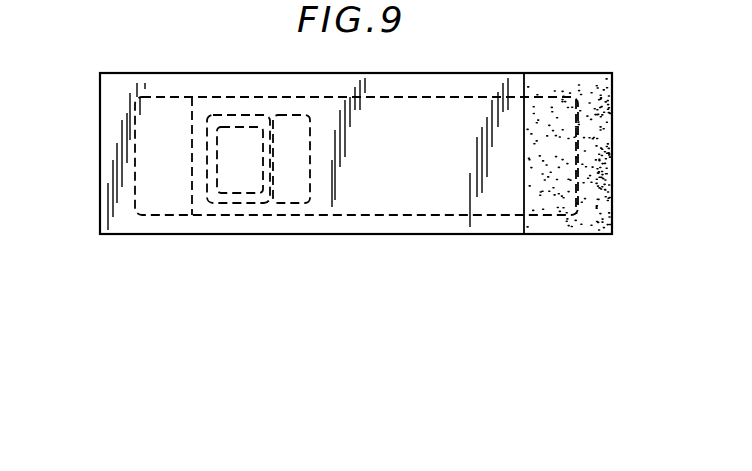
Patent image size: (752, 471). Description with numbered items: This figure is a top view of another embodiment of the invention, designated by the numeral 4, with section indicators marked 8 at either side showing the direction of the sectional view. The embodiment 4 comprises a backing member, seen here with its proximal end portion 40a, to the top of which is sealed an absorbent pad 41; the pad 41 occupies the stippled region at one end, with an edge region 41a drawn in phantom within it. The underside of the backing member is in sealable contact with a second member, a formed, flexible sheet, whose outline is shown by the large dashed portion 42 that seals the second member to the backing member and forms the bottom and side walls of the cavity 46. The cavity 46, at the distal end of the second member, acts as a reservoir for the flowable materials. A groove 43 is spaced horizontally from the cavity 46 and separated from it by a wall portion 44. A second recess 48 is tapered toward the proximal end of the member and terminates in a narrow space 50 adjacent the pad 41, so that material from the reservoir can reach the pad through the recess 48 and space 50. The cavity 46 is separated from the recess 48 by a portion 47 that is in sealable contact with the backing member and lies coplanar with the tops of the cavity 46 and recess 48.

The embodiment 4 is at (621, 64).
The section line 8-8 indicator 8 is at (88, 159).
The end portion of casing 40a is at (110, 222).
The absorbent pad 41 is at (603, 236).
The inner end face of plug 41a is at (551, 92).
The sealing portion of second member 42 is at (163, 73).
The groove 43 is at (252, 107).
The wall portion 44 is at (226, 113).
The cavity 46 is at (233, 183).
The separating portion 47 is at (293, 193).
The second recess 48 is at (445, 115).
The narrow space 50 is at (551, 200).